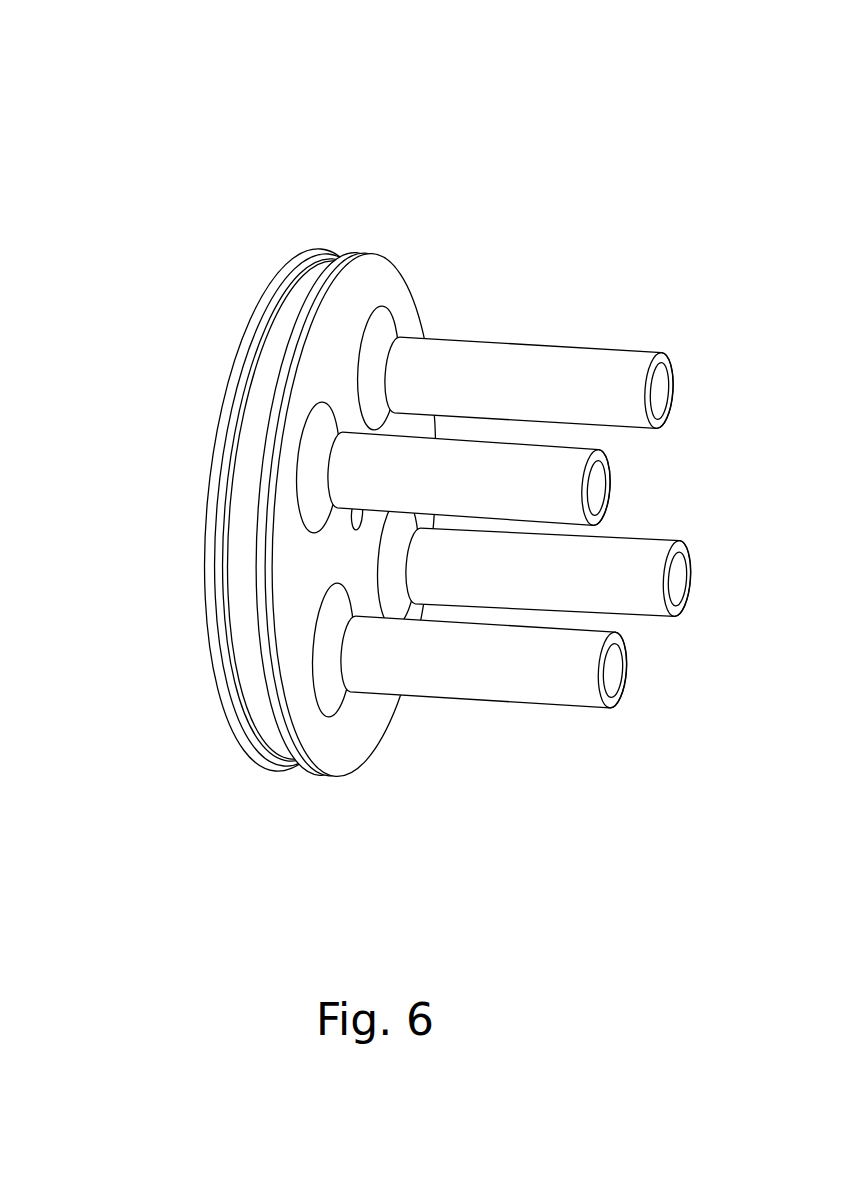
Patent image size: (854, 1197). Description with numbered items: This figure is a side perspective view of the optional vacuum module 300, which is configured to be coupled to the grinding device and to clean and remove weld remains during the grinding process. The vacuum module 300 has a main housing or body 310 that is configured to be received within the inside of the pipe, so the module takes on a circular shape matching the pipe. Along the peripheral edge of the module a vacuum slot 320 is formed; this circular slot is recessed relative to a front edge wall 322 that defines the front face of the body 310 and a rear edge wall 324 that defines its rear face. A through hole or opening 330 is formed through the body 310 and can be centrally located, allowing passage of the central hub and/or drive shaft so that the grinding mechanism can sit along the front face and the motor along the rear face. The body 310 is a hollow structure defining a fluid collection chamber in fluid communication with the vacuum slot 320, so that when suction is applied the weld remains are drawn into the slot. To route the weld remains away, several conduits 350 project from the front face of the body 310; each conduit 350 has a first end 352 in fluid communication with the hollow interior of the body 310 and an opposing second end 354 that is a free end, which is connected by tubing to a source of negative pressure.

The vacuum module 300 is at (84, 98).
The body 310 is at (393, 283).
The vacuum slot 320 is at (236, 460).
The front edge wall 322 is at (288, 276).
The rear edge wall 324 is at (372, 250).
The opening 330 is at (352, 528).
The conduit 350 is at (600, 345).
The first end 352 is at (403, 332).
The second end 354 is at (675, 410).